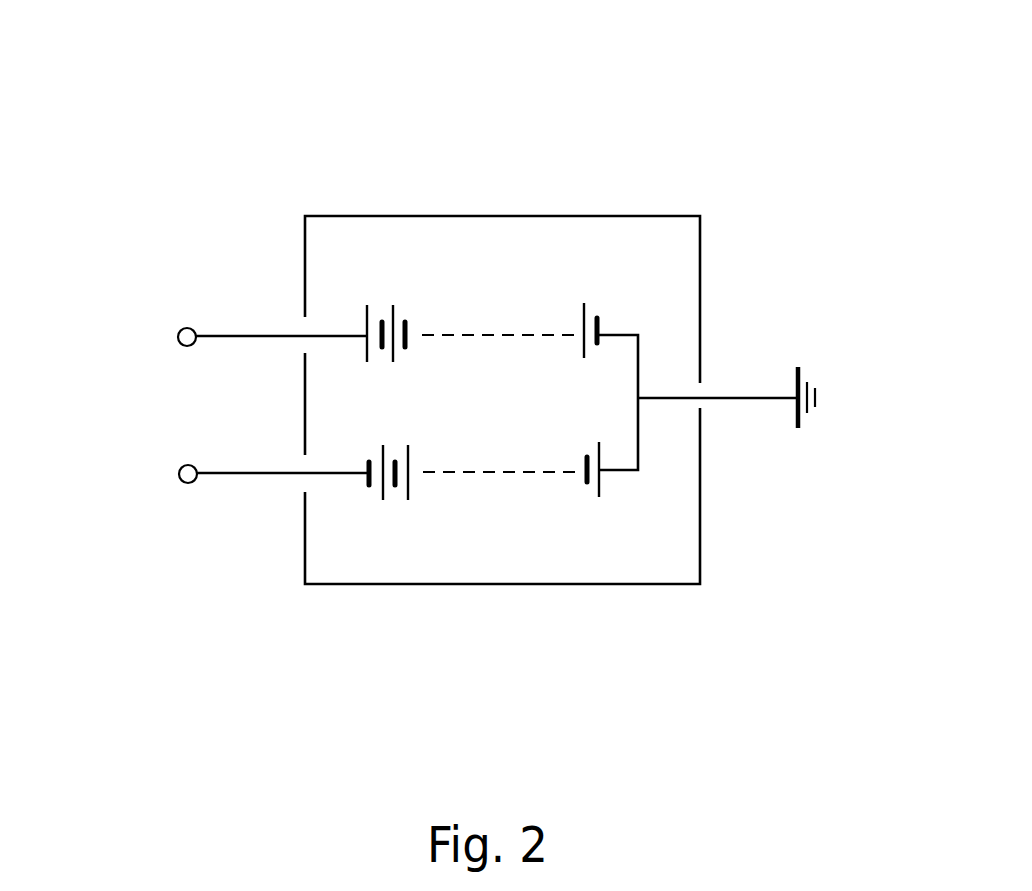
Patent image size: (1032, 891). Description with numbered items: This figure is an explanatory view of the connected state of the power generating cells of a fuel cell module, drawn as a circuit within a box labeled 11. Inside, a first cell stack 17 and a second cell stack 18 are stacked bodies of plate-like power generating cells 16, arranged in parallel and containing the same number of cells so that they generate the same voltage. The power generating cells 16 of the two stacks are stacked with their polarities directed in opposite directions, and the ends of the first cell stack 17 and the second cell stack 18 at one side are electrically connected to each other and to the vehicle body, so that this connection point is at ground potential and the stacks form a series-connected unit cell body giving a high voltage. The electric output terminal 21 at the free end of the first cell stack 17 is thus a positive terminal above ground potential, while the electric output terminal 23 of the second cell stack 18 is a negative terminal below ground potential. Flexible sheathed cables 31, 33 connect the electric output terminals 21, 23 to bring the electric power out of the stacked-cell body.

The power supply device 11 is at (641, 143).
The power generating cell 16 is at (377, 306).
The first cell stack 17 is at (487, 328).
The second cell stack 18 is at (492, 481).
The electric output terminal 21 is at (178, 334).
The electric output terminal 23 is at (179, 476).
The sheathed cable 31 is at (245, 335).
The sheathed cable 33 is at (245, 476).